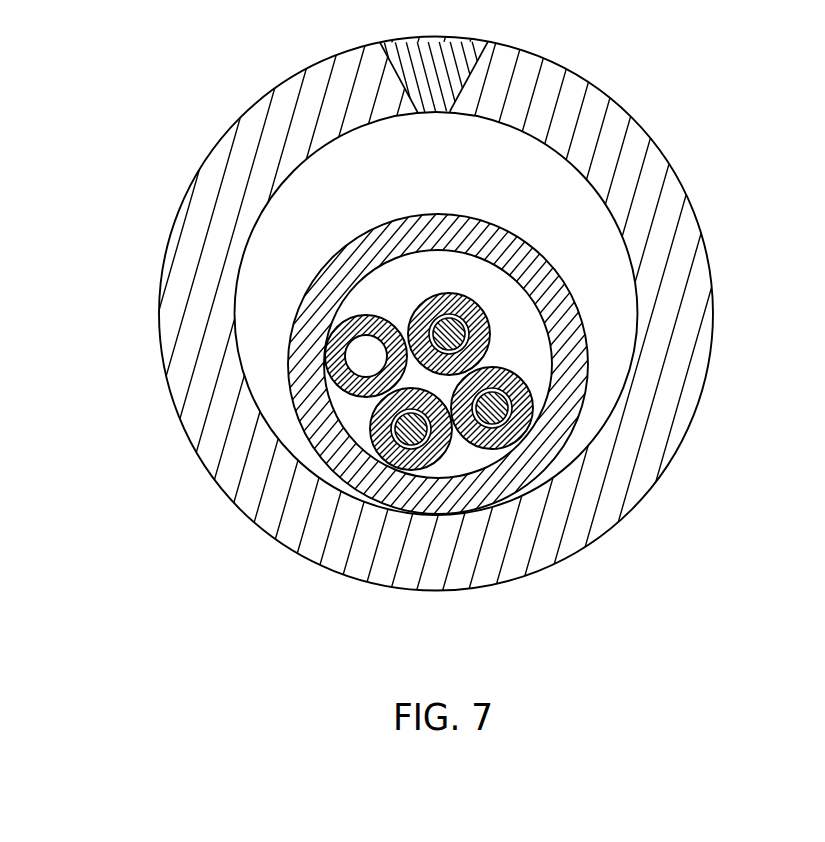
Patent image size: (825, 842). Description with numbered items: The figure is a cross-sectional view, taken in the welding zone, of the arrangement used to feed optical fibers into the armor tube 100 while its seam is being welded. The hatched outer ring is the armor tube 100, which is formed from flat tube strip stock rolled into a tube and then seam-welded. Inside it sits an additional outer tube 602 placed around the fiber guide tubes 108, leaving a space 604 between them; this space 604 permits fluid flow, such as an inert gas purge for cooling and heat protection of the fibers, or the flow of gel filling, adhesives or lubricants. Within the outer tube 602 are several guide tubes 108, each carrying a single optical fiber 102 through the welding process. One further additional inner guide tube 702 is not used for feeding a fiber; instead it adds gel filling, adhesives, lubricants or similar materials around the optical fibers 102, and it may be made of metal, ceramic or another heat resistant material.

The armor tube 100 is at (586, 113).
The additional (outer) tube 602 is at (513, 253).
The space 604 is at (390, 293).
The additional inner guide tube 702 is at (363, 355).
The guide tube 108 is at (497, 412).
The optical fiber 102 is at (499, 424).